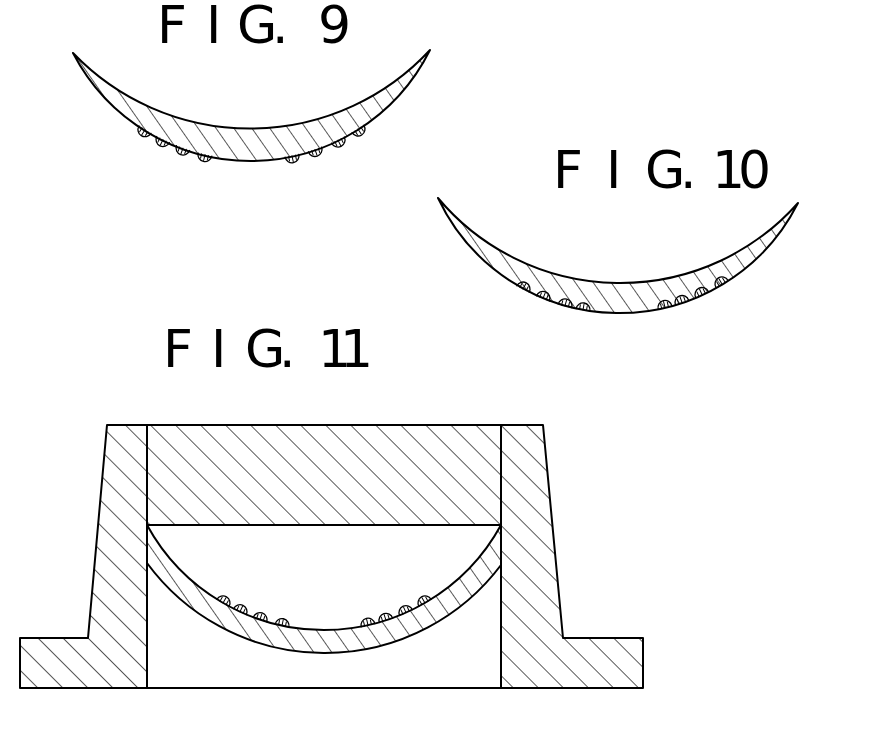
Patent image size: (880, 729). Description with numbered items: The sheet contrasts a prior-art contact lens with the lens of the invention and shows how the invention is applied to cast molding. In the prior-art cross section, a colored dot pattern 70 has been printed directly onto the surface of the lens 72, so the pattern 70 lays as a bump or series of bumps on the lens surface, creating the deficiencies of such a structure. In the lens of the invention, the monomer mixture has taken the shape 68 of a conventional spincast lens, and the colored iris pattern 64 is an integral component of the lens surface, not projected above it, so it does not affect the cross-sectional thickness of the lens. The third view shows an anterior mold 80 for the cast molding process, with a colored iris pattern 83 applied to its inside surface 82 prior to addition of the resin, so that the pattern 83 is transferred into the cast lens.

In FIG. 9, the lens 72 is at (236, 135).
In FIG. 9, the pattern 70 is at (280, 166).
In FIG. 10, the shape of spincast lens 68 is at (630, 290).
In FIG. 10, the colored iris pattern 64 is at (681, 307).
In FIG. 11, the anterior mold 80 is at (324, 566).
In FIG. 11, the inside surface 82 is at (184, 574).
In FIG. 11, the colored iris pattern 83 is at (284, 613).